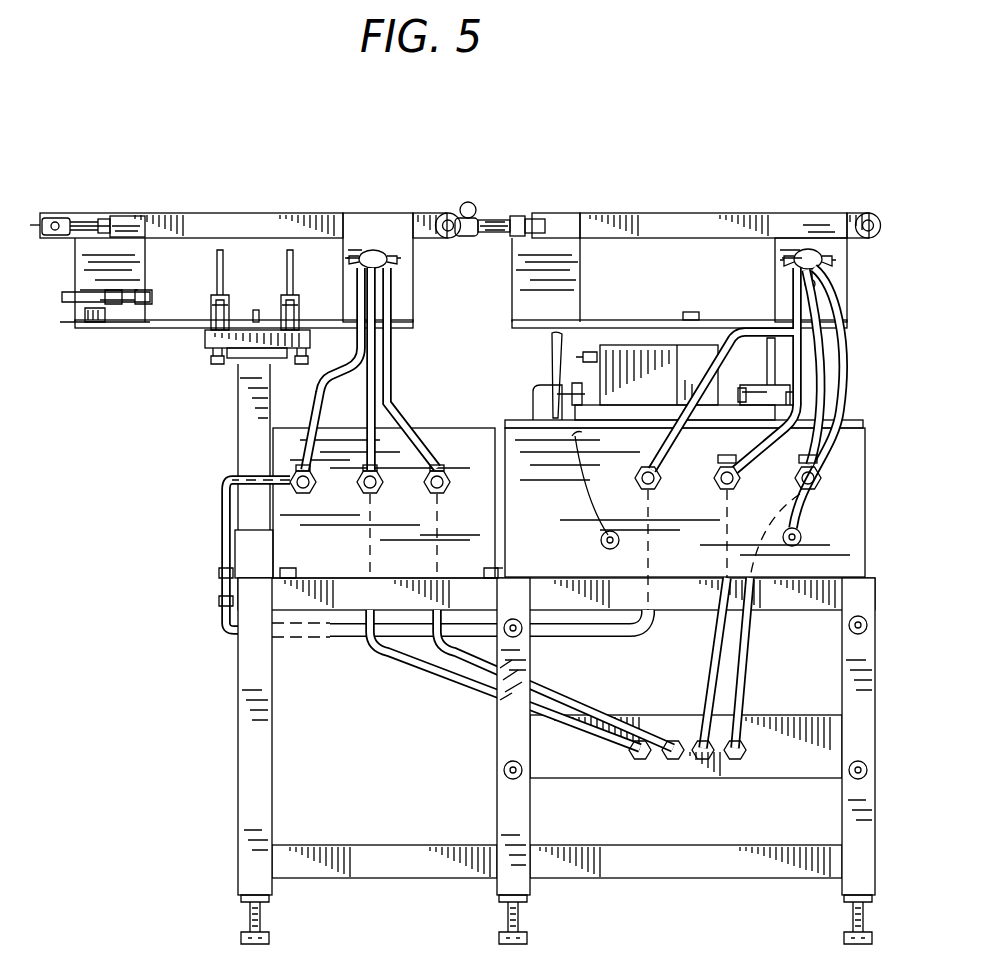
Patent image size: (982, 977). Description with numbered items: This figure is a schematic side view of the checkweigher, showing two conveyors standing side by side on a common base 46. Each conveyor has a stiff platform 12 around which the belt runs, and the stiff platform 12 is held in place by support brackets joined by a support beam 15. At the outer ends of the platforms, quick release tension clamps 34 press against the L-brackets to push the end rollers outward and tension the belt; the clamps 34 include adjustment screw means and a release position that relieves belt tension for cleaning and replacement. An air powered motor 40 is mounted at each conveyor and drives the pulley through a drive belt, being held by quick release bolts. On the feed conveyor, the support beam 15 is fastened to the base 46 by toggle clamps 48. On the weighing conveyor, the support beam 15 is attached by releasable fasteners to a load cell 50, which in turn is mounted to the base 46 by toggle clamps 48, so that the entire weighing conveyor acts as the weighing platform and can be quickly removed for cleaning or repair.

The stiff platform 12 is at (262, 234).
The support beam 15 is at (179, 322).
The quick release tension clamp 34 is at (70, 220).
The air powered motor 40 is at (397, 250).
The base 46 is at (218, 442).
The toggle clamp 48 is at (206, 333).
The load cell 50 is at (598, 347).